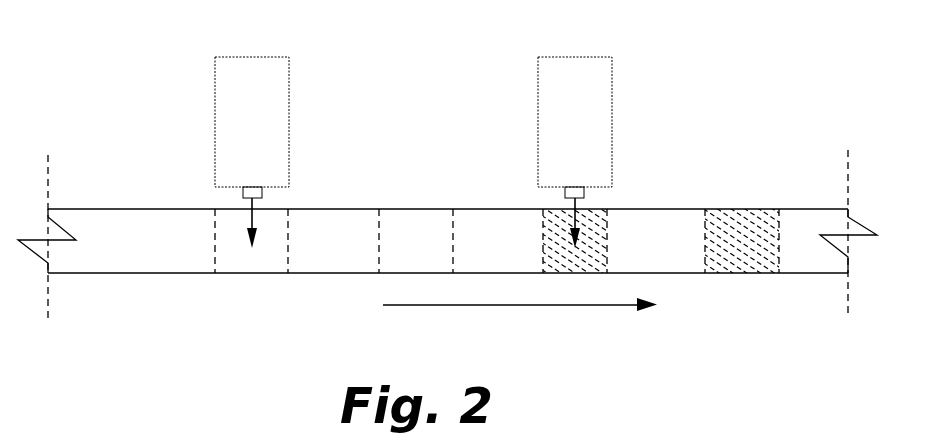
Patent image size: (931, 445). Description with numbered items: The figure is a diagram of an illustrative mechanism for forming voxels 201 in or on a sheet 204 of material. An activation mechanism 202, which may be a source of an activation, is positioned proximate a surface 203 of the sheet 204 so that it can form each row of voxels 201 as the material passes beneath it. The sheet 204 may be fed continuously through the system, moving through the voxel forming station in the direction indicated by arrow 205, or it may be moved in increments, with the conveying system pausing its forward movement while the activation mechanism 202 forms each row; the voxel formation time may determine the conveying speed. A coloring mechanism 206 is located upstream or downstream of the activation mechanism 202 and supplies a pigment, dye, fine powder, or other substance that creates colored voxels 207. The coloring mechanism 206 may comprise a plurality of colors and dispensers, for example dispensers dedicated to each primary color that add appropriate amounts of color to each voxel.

The voxel 201 is at (398, 217).
The activation mechanism 202 is at (257, 83).
The surface 203 is at (126, 203).
The sheet 204 is at (133, 255).
The arrow 205 is at (383, 305).
The coloring mechanism 206 is at (583, 67).
The colored voxels 207 is at (713, 221).